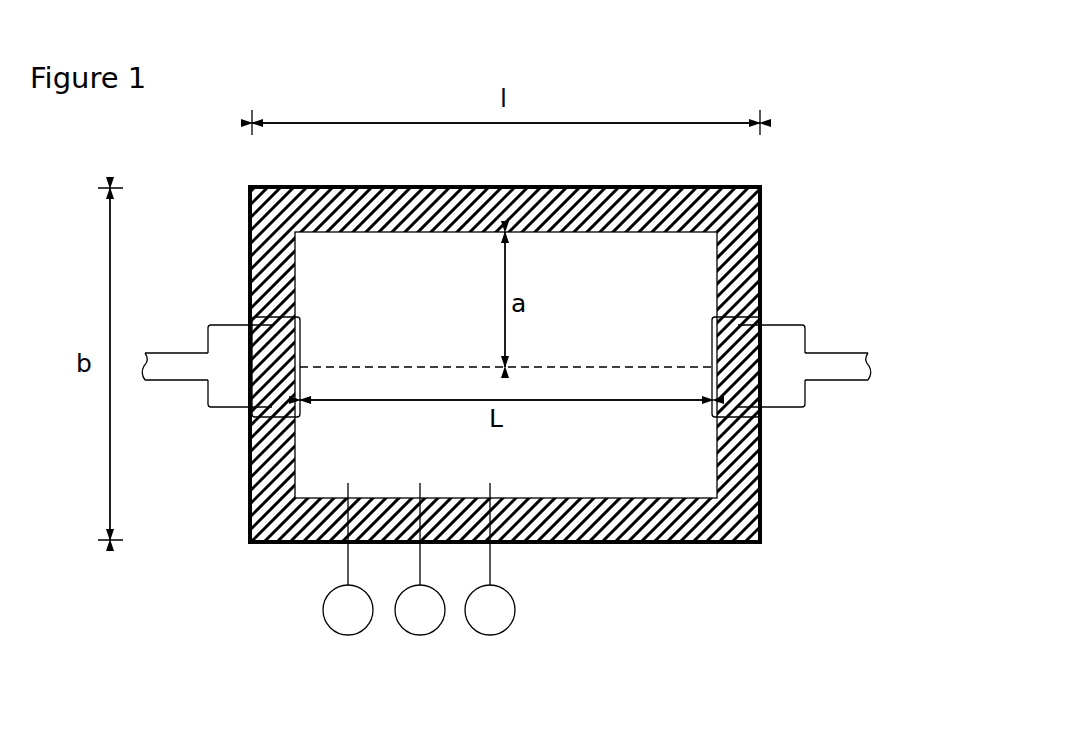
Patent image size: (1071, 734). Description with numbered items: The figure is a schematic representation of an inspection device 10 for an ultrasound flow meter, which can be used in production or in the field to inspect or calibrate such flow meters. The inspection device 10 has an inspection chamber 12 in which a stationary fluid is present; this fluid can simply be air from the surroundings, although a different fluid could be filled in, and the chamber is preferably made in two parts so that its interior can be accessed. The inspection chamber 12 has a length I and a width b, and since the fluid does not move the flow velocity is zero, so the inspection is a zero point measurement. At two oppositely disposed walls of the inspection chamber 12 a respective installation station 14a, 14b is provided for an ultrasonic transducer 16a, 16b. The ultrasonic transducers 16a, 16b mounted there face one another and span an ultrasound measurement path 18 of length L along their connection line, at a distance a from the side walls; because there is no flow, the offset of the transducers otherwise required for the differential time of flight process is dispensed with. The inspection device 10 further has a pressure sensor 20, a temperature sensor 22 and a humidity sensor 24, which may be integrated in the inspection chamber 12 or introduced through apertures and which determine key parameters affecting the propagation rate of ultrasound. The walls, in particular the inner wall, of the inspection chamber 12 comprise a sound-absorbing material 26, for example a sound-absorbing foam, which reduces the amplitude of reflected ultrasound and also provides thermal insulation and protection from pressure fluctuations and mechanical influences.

The inspection device 10 is at (872, 128).
The inspection chamber 12 is at (652, 480).
The installation station 14a is at (250, 325).
The installation station 14b is at (762, 290).
The ultrasonic transducer 16a is at (215, 395).
The ultrasonic transducer 16b is at (783, 387).
The ultrasound measurement path 18 is at (437, 367).
The pressure sensor 20 is at (325, 614).
The temperature sensor 22 is at (422, 625).
The humidity sensor 24 is at (502, 617).
The sound-absorbing material 26 is at (762, 537).